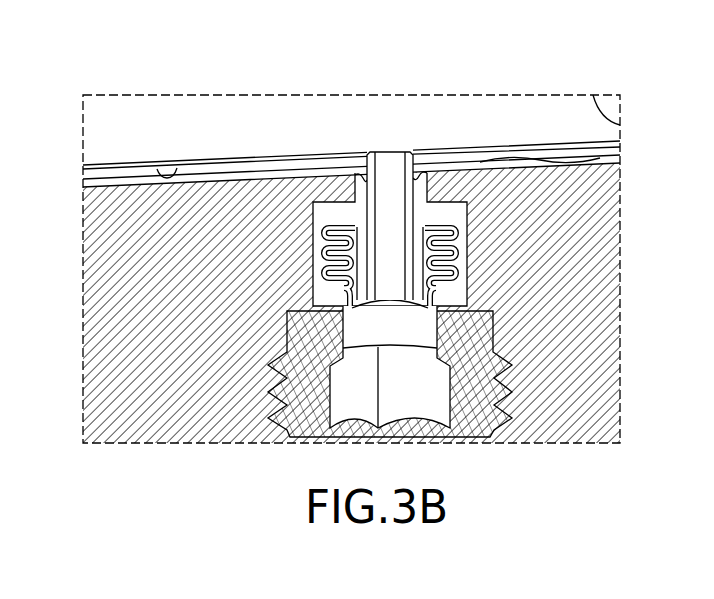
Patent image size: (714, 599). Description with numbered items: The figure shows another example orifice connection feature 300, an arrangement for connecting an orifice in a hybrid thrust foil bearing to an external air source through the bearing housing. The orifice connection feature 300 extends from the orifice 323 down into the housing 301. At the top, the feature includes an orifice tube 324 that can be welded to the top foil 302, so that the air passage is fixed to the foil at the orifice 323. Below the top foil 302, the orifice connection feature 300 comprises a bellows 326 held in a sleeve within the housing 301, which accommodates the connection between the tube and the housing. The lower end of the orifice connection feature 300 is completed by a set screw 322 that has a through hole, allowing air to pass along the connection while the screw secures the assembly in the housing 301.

The orifice connection feature 300 is at (289, 128).
The housing 301 is at (593, 355).
The top foil 302 is at (552, 122).
The set screw 322 is at (345, 372).
The orifice 323 is at (390, 148).
The orifice tube 324 is at (432, 148).
The bellows 326 is at (467, 242).